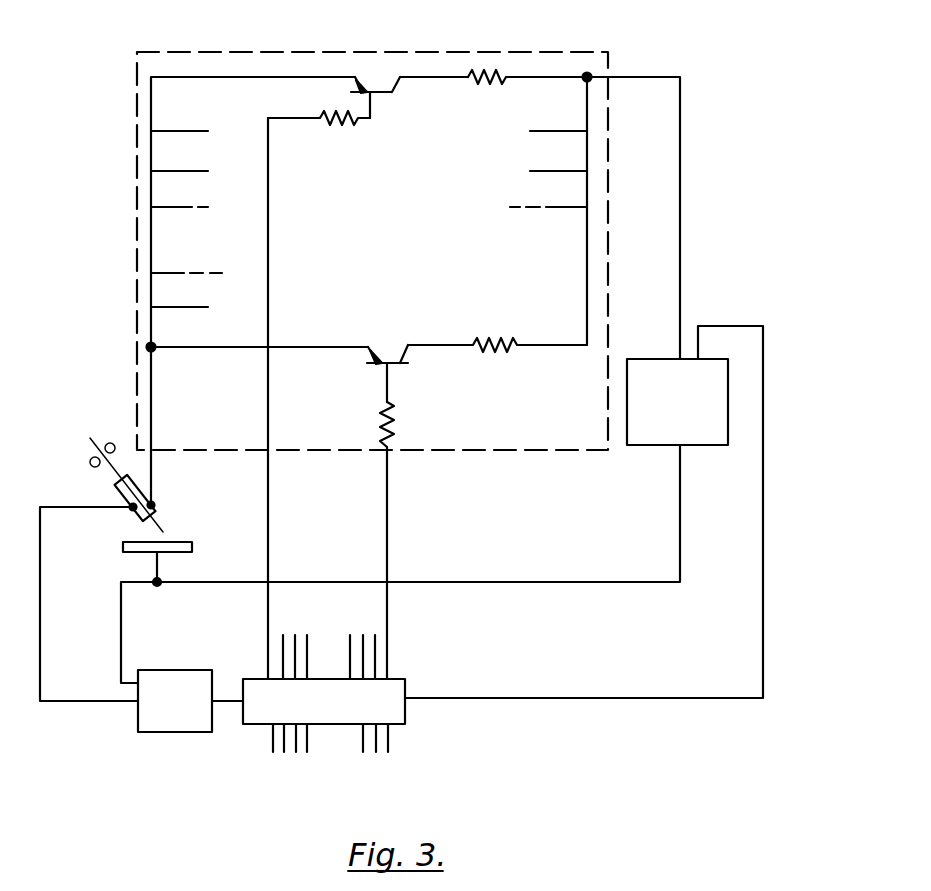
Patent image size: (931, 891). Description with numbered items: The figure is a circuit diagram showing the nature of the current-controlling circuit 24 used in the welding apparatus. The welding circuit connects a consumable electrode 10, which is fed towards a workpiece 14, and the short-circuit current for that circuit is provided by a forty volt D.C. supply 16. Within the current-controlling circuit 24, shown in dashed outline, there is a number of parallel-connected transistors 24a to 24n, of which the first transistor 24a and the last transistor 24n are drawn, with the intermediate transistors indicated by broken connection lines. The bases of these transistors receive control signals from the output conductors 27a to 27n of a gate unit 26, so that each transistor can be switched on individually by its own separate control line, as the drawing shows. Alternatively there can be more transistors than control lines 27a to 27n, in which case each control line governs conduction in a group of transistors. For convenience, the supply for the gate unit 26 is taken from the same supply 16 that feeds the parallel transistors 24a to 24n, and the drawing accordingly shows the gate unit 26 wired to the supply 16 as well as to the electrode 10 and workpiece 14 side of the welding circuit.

The consumable electrode 10 is at (156, 514).
The workpiece 14 is at (194, 546).
The 40 volt D.C. supply 16 is at (648, 359).
The current-controlling circuit 24 is at (503, 52).
The transistor 24a is at (373, 97).
The transistor 24n is at (392, 367).
The gate unit 26 is at (406, 684).
The output conductor 27a is at (268, 664).
The output conductor 27n is at (390, 651).